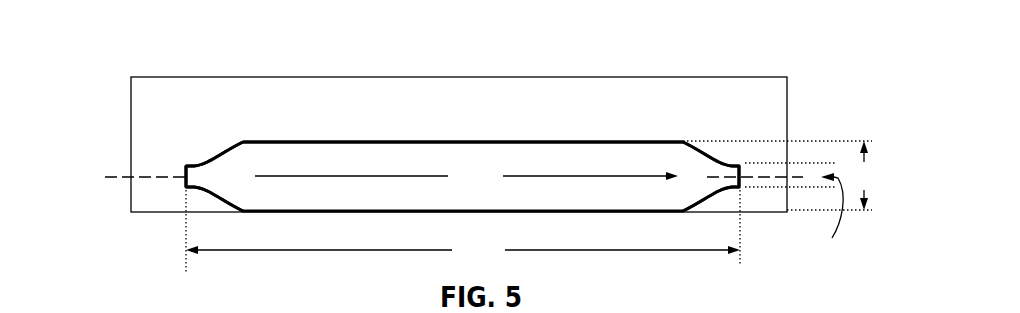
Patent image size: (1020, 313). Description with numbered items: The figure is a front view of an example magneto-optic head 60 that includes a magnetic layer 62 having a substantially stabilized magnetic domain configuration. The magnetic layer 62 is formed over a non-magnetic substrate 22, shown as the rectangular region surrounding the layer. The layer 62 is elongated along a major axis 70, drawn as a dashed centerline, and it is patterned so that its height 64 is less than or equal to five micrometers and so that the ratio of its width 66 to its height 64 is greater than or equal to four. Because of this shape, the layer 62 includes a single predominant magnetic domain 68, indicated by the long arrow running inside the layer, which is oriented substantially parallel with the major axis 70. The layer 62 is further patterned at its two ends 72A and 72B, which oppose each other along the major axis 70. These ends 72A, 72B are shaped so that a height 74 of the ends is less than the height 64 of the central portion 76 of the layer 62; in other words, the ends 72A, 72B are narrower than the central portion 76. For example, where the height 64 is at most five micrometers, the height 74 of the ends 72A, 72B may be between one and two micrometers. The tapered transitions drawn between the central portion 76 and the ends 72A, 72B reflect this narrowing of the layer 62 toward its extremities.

The magneto-optic head 60 is at (104, 79).
The non-magnetic substrate 22 is at (143, 137).
The major axis 70 is at (121, 178).
The magnetic layer 62 is at (345, 165).
The end 72A is at (196, 160).
The end 72B is at (726, 158).
The central portion 76 is at (483, 130).
The single predominant magnetic domain 68 is at (488, 186).
The width 66 is at (463, 231).
The height 64 is at (780, 175).
The height of ends 74 is at (831, 216).